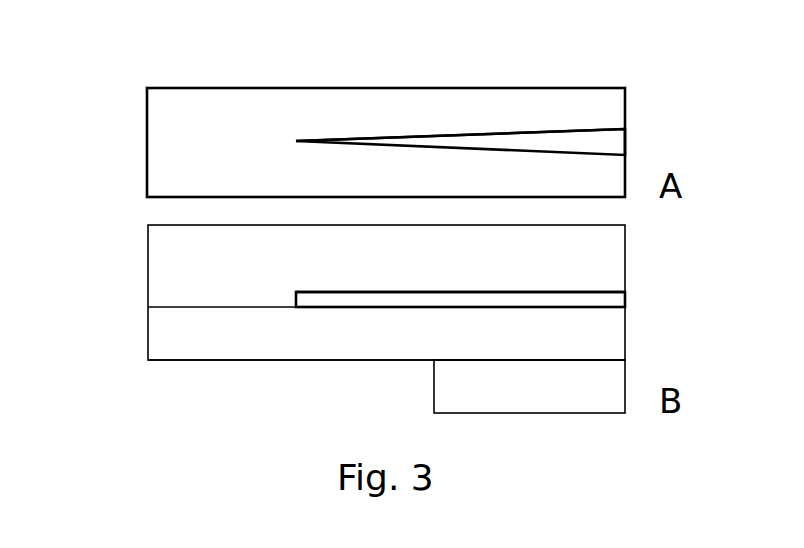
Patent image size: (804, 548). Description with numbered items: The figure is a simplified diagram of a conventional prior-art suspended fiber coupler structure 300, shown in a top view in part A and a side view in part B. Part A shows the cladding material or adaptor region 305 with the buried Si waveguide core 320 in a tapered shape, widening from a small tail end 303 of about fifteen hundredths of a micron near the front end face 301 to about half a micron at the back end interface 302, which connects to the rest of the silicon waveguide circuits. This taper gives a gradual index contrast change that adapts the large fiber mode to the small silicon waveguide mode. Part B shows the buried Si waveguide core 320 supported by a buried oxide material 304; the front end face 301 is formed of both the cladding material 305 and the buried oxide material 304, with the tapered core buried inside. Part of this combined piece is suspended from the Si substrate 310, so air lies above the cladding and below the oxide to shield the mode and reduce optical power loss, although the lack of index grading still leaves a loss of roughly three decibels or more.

The suspended fiber coupler structure 300 is at (140, 38).
The front end face 301 is at (148, 288).
The back end interface 302 is at (626, 140).
The tail end 303 is at (296, 140).
The cladding material 305 is at (422, 112).
The buried Si waveguide core 320 is at (519, 142).
The buried oxide material 304 is at (253, 343).
The Si substrate 310 is at (529, 386).